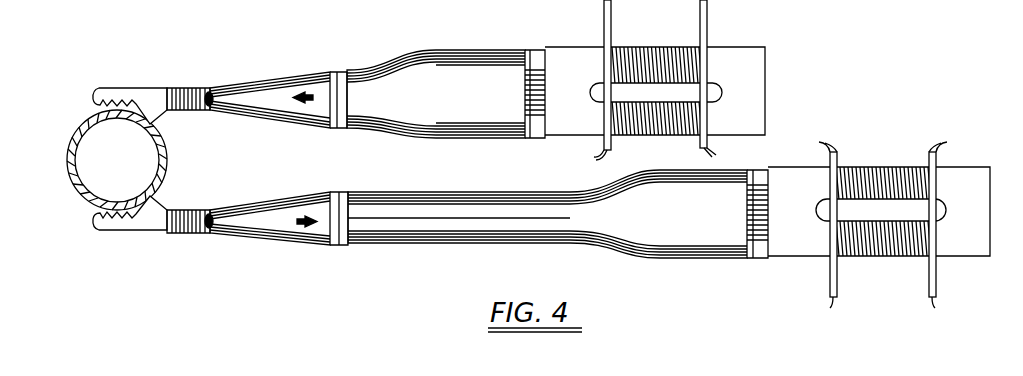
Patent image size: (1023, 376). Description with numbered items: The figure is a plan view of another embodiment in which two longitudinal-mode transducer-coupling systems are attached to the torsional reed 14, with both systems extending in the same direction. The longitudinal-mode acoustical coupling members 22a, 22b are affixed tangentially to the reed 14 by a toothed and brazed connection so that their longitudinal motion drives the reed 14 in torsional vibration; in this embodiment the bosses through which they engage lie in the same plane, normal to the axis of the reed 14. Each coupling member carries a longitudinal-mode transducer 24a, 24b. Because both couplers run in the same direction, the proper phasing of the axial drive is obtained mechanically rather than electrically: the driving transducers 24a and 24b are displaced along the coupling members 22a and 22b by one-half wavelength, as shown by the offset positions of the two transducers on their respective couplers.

The torsional reed 14 is at (166, 158).
The longitudinal-mode acoustical coupling member 22a is at (313, 74).
The longitudinal-mode acoustical coupling member 22b is at (323, 245).
The longitudinal-mode transducer 24a is at (735, 52).
The longitudinal-mode transducer 24b is at (952, 172).